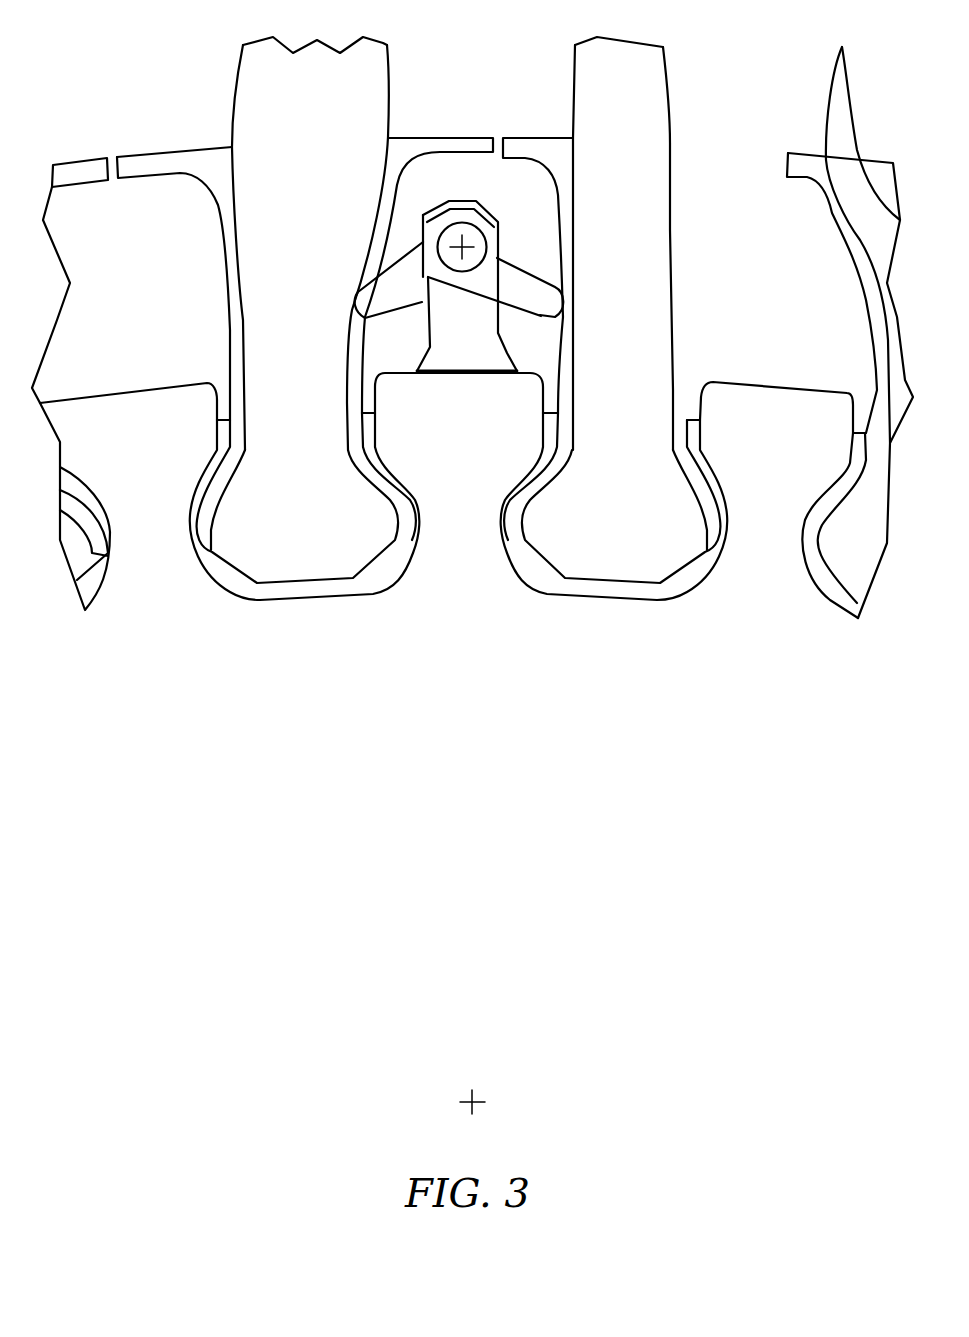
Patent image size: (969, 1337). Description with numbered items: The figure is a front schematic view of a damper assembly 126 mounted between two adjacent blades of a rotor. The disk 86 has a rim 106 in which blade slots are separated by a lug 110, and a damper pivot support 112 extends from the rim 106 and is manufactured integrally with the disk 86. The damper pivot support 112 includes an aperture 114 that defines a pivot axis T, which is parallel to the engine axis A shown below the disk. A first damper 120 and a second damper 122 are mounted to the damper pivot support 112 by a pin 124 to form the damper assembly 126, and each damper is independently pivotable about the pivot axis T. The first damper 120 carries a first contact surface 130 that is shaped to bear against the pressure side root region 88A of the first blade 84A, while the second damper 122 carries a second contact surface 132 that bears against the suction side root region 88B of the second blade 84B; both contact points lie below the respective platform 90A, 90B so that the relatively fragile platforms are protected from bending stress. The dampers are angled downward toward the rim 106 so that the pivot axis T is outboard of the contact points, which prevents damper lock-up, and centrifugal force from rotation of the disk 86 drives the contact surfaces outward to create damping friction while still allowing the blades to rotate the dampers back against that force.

The disk 86 is at (651, 694).
The first blade 84A is at (327, 126).
The second blade 84B is at (644, 304).
The pressure side root region 88A is at (327, 514).
The suction side root region 88B is at (629, 507).
The platform 90A is at (445, 150).
The platform 90B is at (553, 150).
The rim 106 is at (420, 370).
The lug 110 is at (485, 434).
The damper pivot support 112 is at (485, 344).
The aperture 114 is at (466, 222).
The first damper 120 is at (393, 311).
The second damper 122 is at (531, 314).
The pin 124 is at (445, 240).
The damper assembly 126 is at (525, 236).
The first contact surface 130 is at (403, 273).
The second contact surface 132 is at (532, 267).
The pivot axis T is at (473, 240).
The engine axis A is at (472, 1102).